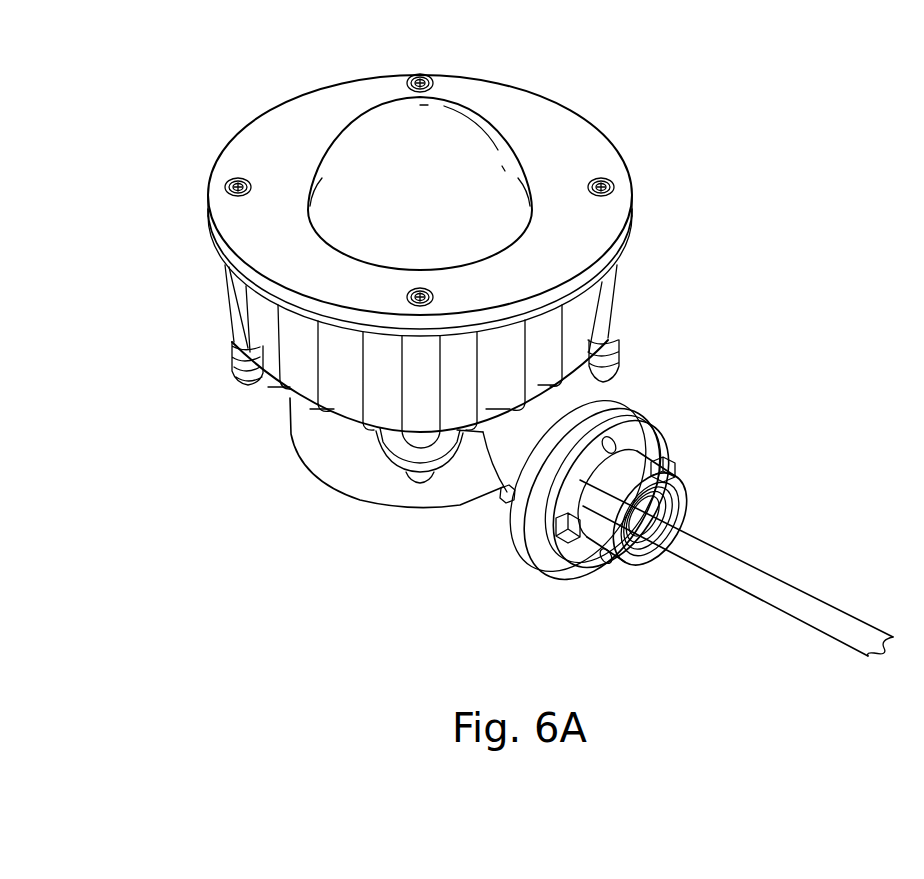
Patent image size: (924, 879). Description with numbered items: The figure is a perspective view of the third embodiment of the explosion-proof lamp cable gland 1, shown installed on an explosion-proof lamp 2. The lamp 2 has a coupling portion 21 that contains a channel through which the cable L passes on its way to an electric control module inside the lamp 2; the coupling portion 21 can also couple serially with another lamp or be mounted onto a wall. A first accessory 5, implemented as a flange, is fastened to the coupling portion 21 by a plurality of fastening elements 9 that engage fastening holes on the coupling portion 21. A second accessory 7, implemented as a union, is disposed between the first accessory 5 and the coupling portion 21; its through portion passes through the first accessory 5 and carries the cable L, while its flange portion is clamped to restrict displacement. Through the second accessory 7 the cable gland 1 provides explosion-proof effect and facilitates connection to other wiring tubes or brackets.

The explosion-proof lamp cable gland 1 is at (688, 472).
The explosion-proof lamp 2 is at (203, 141).
The first accessory 5 is at (627, 423).
The second accessory 7 is at (598, 530).
The fastening elements 9 is at (555, 530).
The coupling portion 21 is at (592, 410).
The cable L is at (736, 574).